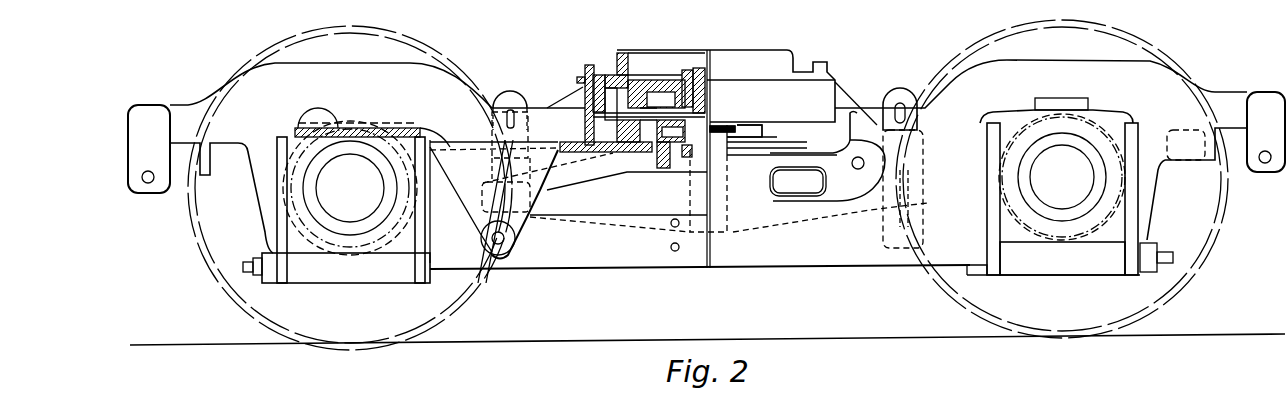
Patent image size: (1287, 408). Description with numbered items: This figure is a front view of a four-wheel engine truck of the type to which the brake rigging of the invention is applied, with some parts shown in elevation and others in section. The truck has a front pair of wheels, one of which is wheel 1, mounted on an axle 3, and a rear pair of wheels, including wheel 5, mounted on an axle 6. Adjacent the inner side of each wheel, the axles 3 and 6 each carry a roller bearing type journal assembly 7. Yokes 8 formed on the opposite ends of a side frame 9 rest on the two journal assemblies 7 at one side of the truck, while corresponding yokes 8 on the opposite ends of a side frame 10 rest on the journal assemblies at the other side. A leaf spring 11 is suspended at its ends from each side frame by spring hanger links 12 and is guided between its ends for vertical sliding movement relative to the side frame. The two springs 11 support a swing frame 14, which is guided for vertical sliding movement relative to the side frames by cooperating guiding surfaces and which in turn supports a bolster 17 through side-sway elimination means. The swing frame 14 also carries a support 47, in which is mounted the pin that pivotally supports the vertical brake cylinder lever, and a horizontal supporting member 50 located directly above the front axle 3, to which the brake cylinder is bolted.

The wheel 1 is at (1212, 238).
The axle 3 is at (1097, 178).
The wheel 5 is at (207, 265).
The axle 6 is at (332, 188).
The roller bearing type journal assembly 7 is at (307, 227).
The yoke 8 is at (262, 212).
The side frame 9 is at (787, 260).
The side frame 10 is at (585, 260).
The leaf spring 11 is at (762, 138).
The spring hanger link 12 is at (510, 94).
The swing frame 14 is at (589, 64).
The bolster 17 is at (712, 50).
The support 47 is at (499, 256).
The horizontal supporting member 50 is at (300, 113).